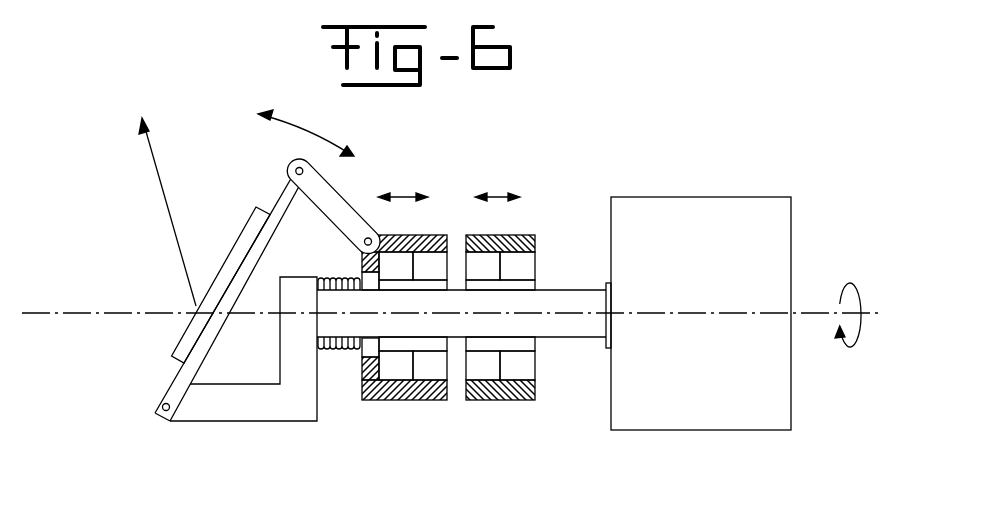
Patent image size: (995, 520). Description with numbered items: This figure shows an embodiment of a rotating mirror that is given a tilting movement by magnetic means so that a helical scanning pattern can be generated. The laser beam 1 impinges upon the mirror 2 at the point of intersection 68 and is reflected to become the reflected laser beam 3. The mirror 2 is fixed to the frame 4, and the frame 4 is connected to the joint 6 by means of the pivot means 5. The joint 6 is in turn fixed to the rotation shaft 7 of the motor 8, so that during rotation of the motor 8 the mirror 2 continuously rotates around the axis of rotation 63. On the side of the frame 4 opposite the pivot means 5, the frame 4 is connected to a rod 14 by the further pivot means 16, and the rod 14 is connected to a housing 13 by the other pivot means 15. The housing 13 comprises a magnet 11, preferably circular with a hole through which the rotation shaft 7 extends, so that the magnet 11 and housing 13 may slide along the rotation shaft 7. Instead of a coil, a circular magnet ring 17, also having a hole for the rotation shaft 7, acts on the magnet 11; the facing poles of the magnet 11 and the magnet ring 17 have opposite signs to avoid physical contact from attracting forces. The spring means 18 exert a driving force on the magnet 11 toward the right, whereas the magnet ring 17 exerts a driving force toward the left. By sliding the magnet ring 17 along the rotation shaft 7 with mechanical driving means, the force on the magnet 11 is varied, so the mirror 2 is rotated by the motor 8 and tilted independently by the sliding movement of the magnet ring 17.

The laser beam 1 is at (97, 312).
The mirror 2 is at (241, 236).
The reflected laser beam 3 is at (160, 176).
The frame 4 is at (173, 391).
The pivot means 5 is at (164, 422).
The joint 6 is at (261, 414).
The rotation shaft 7 is at (577, 305).
The motor 8 is at (694, 410).
The magnet 11 is at (405, 380).
The housing 13 is at (418, 208).
The rod 14 is at (336, 201).
The other pivot means 15 is at (356, 243).
The further pivot means 16 is at (293, 169).
The circular magnet ring 17 is at (513, 400).
The spring means 18 is at (334, 354).
The axis of rotation 63 is at (813, 312).
The point of intersection 68 is at (191, 305).